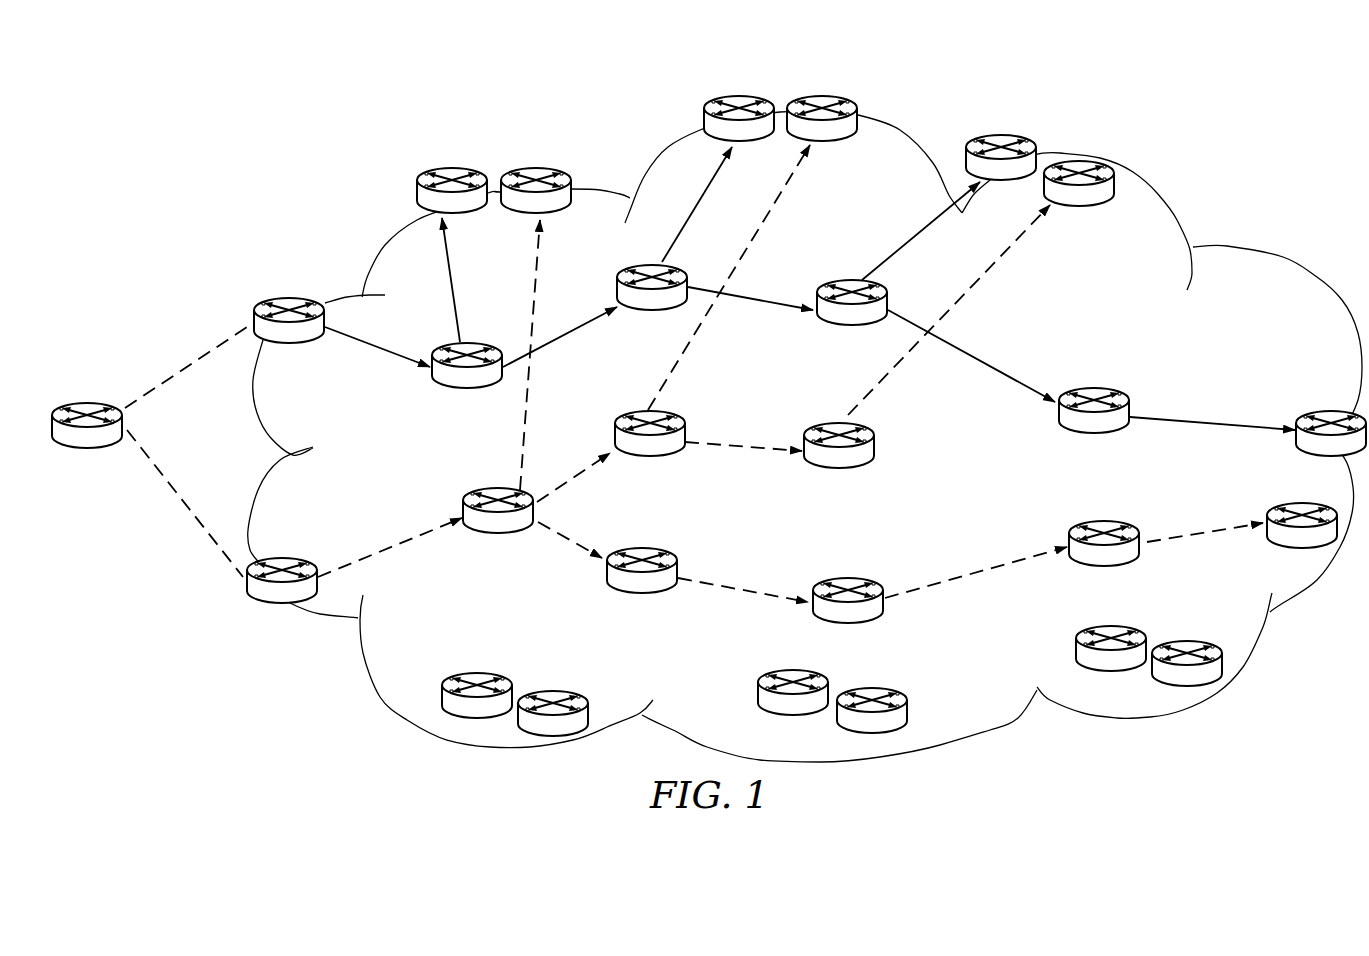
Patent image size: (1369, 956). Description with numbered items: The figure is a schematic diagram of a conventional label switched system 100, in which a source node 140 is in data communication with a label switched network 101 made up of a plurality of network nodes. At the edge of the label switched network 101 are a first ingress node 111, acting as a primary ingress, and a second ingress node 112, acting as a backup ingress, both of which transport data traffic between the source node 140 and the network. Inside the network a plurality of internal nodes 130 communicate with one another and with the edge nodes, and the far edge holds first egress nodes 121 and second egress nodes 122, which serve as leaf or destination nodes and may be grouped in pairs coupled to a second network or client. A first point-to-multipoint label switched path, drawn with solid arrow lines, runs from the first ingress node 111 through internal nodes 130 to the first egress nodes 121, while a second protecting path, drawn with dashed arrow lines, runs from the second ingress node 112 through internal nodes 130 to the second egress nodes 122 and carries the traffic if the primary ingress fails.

The label switched system 100 is at (266, 79).
The label switched network 101 is at (1260, 254).
The first ingress node 111 is at (296, 345).
The second ingress node 112 is at (265, 600).
The first egress node 121 is at (418, 194).
The second egress node 122 is at (560, 210).
The internal node 130 is at (463, 387).
The source node 140 is at (92, 447).